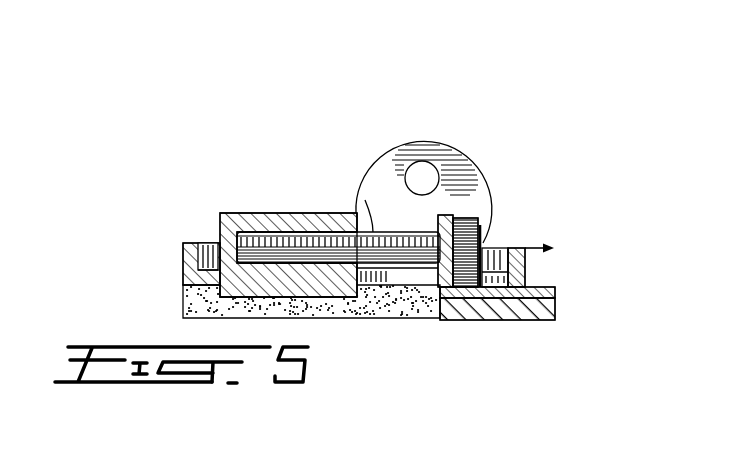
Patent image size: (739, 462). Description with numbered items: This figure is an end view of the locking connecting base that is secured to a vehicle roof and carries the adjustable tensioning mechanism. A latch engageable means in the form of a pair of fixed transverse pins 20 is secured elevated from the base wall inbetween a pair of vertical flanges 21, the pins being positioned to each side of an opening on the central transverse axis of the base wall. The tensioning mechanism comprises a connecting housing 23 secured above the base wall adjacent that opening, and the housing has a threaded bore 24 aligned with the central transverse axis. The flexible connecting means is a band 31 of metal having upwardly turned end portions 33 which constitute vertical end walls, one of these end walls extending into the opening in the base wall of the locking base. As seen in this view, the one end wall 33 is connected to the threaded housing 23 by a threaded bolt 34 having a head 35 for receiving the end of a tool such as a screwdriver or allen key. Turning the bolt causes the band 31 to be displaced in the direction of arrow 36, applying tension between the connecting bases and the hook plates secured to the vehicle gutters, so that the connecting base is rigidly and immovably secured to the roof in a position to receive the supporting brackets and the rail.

The fixed transverse pins 20 is at (435, 165).
The vertical flanges 21 is at (383, 170).
The connecting housing 23 is at (238, 212).
The threaded bore 24 is at (282, 212).
The band 31 is at (542, 287).
The end portions 33 is at (440, 275).
The threaded bolt 34 is at (366, 202).
The head 35 is at (480, 228).
The arrow 36 is at (525, 248).